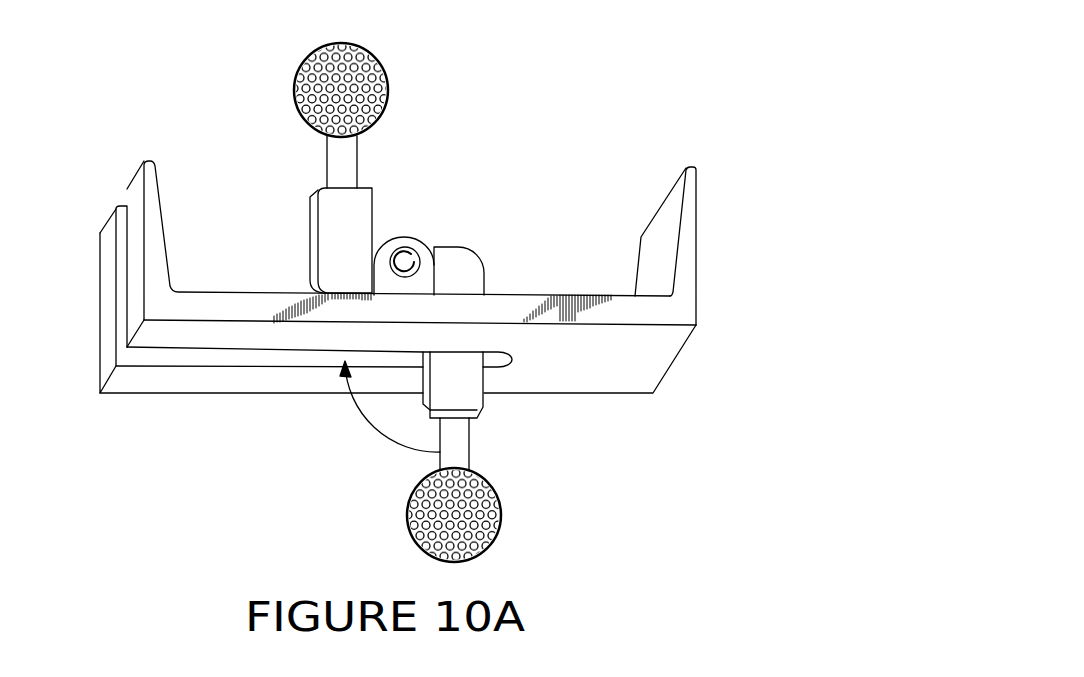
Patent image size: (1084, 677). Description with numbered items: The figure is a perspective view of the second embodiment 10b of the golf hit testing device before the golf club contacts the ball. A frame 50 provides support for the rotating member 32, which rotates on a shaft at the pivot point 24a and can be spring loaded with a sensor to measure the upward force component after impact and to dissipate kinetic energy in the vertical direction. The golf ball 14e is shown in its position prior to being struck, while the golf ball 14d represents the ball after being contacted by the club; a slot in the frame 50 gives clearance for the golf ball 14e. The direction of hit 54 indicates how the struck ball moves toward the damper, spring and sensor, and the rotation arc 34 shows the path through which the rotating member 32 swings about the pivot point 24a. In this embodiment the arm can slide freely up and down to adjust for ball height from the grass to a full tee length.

The second embodiment of present invention 10b is at (741, 71).
The golf ball 14d is at (386, 100).
The golf ball 14e is at (480, 520).
The rotating member 32 is at (355, 215).
The pivot point 24a is at (403, 260).
The frame 50 is at (690, 222).
The direction of hit 54 is at (212, 358).
The rotation arc of rotating arm 34 is at (384, 432).